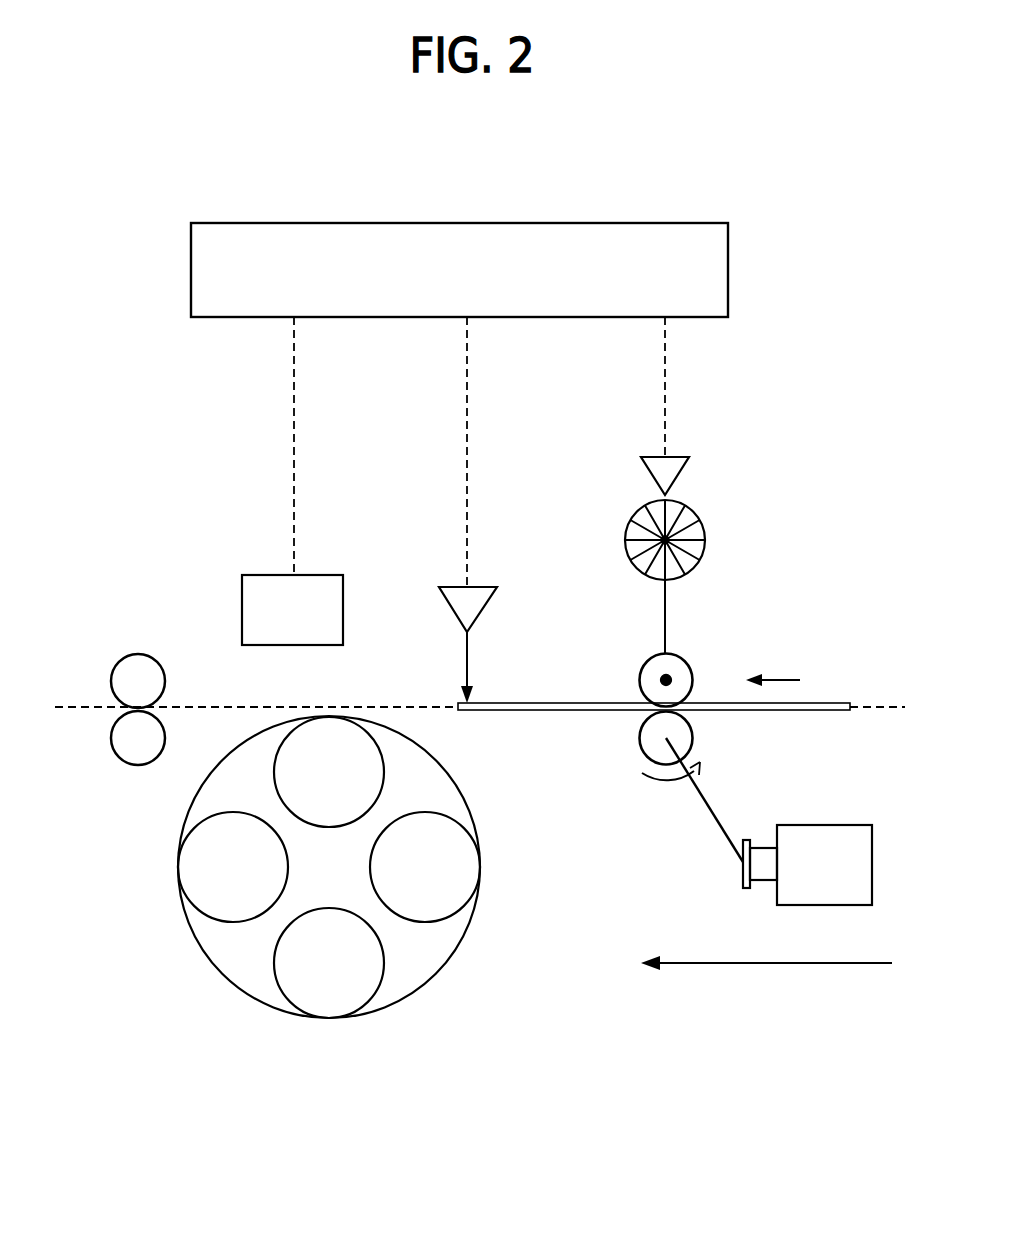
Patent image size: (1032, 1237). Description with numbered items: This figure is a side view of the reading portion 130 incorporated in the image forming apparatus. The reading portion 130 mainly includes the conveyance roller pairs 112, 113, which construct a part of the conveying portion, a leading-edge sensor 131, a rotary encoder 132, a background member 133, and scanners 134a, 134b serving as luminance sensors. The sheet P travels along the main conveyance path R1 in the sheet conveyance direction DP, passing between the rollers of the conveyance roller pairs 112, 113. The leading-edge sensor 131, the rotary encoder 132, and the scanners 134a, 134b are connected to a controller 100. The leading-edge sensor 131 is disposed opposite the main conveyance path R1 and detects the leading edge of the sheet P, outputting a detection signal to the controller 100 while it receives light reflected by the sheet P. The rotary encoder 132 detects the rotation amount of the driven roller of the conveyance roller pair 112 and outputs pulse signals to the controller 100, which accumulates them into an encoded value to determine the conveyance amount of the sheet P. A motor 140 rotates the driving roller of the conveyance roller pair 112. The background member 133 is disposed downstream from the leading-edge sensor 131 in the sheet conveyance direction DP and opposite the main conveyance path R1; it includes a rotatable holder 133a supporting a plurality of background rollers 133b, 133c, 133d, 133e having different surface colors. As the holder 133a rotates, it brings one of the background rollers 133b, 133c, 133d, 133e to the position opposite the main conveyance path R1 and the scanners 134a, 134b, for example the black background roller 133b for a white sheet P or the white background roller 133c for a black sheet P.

The controller 100 is at (636, 222).
The conveyance roller pair 112 is at (697, 730).
The conveyance roller pair 113 is at (111, 662).
The reading portion 130 is at (857, 424).
The leading-edge sensor 131 is at (478, 586).
The rotary encoder 132 is at (674, 456).
The background member 133 is at (329, 878).
The holder 133a is at (468, 808).
The background roller 133b is at (370, 760).
The background roller 133c is at (462, 888).
The background roller 133d is at (367, 968).
The background roller 133e is at (219, 917).
The scanner 134a is at (271, 575).
The scanner 134b is at (273, 585).
The motor 140 is at (827, 825).
The sheet P is at (825, 703).
The main conveyance path R1 is at (243, 707).
The sheet conveyance direction DP is at (766, 983).